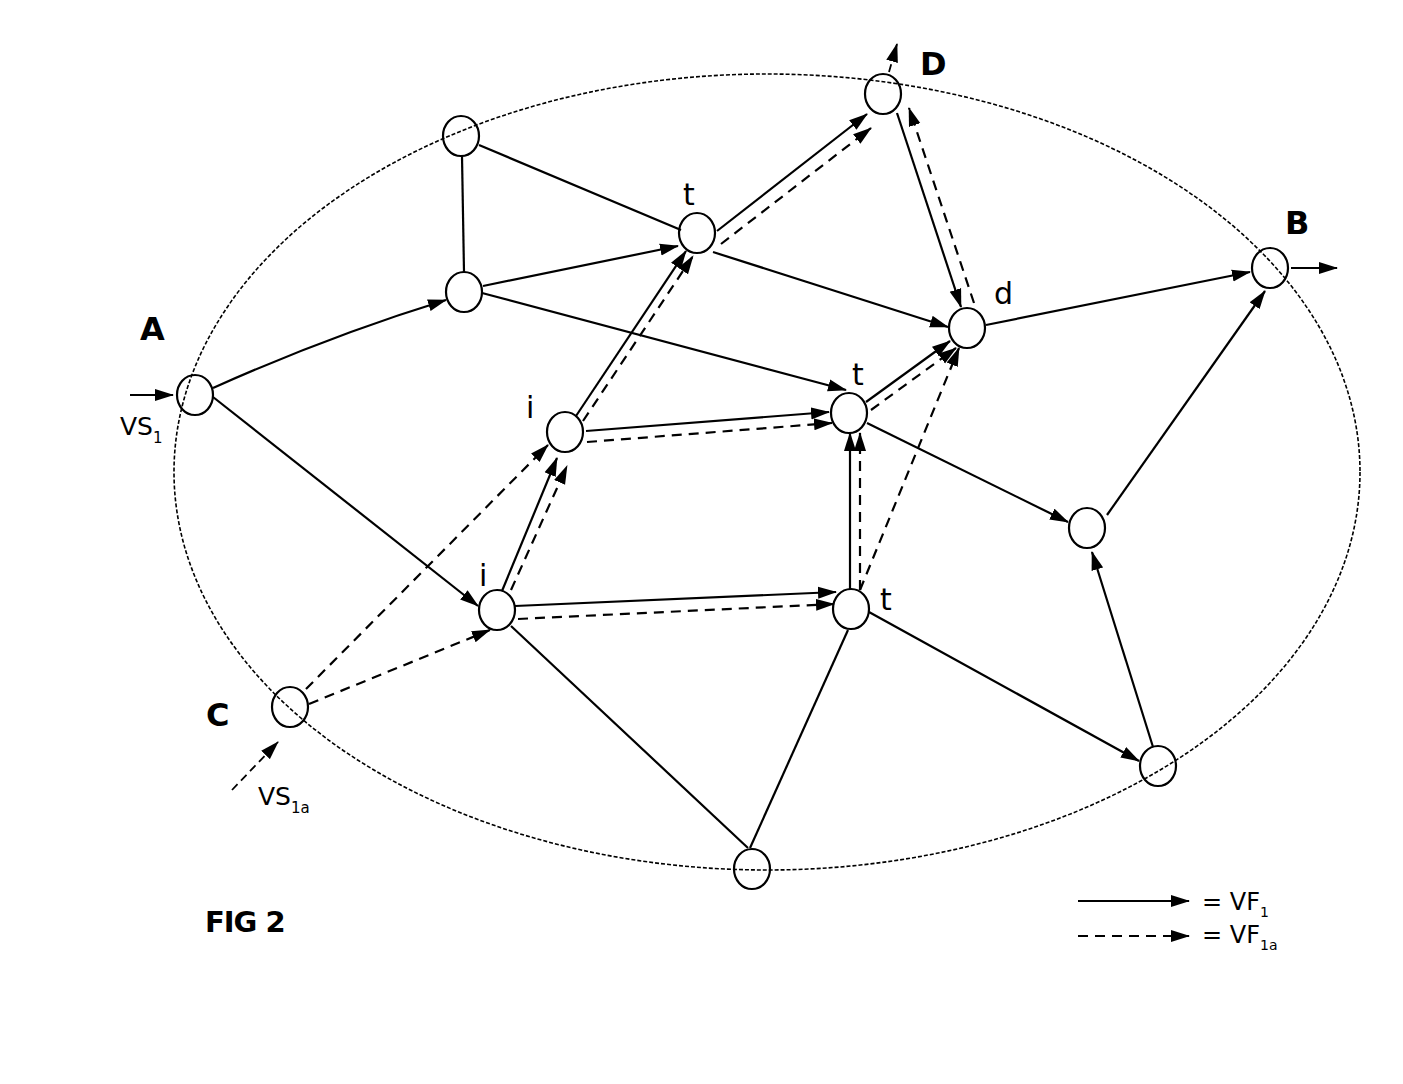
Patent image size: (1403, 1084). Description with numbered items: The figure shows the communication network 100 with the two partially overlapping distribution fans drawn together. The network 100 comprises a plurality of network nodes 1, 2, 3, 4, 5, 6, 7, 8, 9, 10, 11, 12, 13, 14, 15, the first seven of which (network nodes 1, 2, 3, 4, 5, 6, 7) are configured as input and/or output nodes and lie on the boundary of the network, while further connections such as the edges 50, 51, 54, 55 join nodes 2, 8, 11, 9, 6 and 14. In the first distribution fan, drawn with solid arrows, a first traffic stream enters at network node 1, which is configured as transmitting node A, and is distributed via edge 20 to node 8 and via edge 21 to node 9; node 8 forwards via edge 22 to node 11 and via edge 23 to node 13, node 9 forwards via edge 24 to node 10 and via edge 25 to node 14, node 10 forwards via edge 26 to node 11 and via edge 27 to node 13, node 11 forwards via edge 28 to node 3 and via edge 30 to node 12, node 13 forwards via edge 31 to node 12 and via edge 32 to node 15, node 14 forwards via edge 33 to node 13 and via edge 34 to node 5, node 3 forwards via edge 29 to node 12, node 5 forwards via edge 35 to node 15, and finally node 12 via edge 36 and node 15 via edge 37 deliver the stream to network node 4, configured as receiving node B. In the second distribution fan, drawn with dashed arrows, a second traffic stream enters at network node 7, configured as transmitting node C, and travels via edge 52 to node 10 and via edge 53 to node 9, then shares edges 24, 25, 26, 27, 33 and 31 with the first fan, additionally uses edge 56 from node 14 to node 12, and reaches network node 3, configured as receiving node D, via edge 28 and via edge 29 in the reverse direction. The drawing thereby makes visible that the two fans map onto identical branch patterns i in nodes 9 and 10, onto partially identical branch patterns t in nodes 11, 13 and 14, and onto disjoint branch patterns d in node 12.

The communication network 100 is at (251, 576).
The network node 1 is at (195, 395).
The network node 2 is at (461, 136).
The network node 3 is at (883, 94).
The network node 4 is at (1270, 268).
The network node 5 is at (1158, 766).
The network node 6 is at (752, 869).
The network node 7 is at (290, 707).
The network node 8 is at (464, 292).
The network node 9 is at (497, 610).
The network node 10 is at (565, 432).
The network node 11 is at (697, 233).
The network node 12 is at (967, 328).
The network node 13 is at (849, 413).
The network node 14 is at (851, 609).
The network node 15 is at (1087, 528).
The edge 20 is at (329, 344).
The edge 21 is at (345, 501).
The edge 22 is at (580, 264).
The edge 23 is at (664, 341).
The edge 24 is at (537, 524).
The edge 25 is at (675, 601).
The edge 26 is at (629, 336).
The edge 27 is at (709, 421).
The edge 28 is at (794, 179).
The edge 29 is at (938, 207).
The edge 30 is at (830, 289).
The edge 31 is at (911, 375).
The edge 32 is at (967, 472).
The edge 33 is at (870, 511).
The edge 34 is at (1004, 686).
The edge 35 is at (1122, 649).
The edge 36 is at (1118, 298).
The edge 37 is at (1186, 403).
The link 50 is at (447, 214).
The link 51 is at (580, 185).
The edge 52 is at (427, 567).
The edge 53 is at (399, 667).
The link 54 is at (629, 737).
The link 55 is at (799, 739).
The edge 56 is at (909, 469).